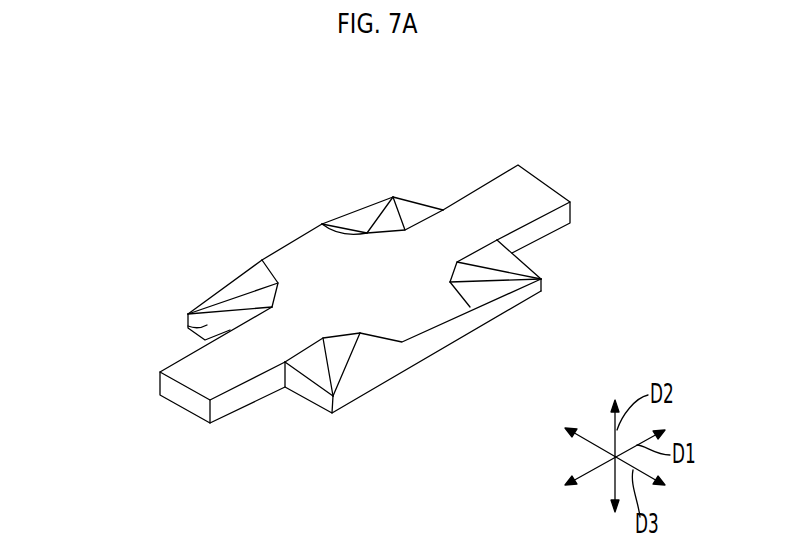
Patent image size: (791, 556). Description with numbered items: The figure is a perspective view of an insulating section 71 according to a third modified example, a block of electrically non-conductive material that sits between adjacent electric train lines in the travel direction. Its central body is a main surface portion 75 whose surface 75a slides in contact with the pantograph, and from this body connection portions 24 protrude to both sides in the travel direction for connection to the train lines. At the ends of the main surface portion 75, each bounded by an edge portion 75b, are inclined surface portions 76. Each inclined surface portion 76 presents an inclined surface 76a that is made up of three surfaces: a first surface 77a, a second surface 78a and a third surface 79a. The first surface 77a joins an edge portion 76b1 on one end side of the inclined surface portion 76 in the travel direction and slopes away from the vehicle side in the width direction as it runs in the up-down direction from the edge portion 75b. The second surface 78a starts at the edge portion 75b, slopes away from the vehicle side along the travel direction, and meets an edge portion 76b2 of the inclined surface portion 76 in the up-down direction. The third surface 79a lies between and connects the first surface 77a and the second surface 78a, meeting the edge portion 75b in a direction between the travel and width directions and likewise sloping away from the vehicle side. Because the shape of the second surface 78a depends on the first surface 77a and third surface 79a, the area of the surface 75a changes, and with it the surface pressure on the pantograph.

The insulating section 71 is at (636, 146).
The connection portion 24 is at (527, 190).
The main surface portion 75 is at (357, 294).
The surface of main surface portion 75a is at (412, 313).
The edge portion of main surface portion 75b is at (275, 248).
The inclined surface portion 76 is at (391, 301).
The inclined surface 76a is at (448, 112).
The edge portion on one end side in travel direction 76b1 is at (434, 207).
The edge portion in up-down direction 76b2 is at (357, 209).
The first surface 77a is at (410, 205).
The second surface 78a is at (377, 193).
The third surface 79a is at (392, 193).